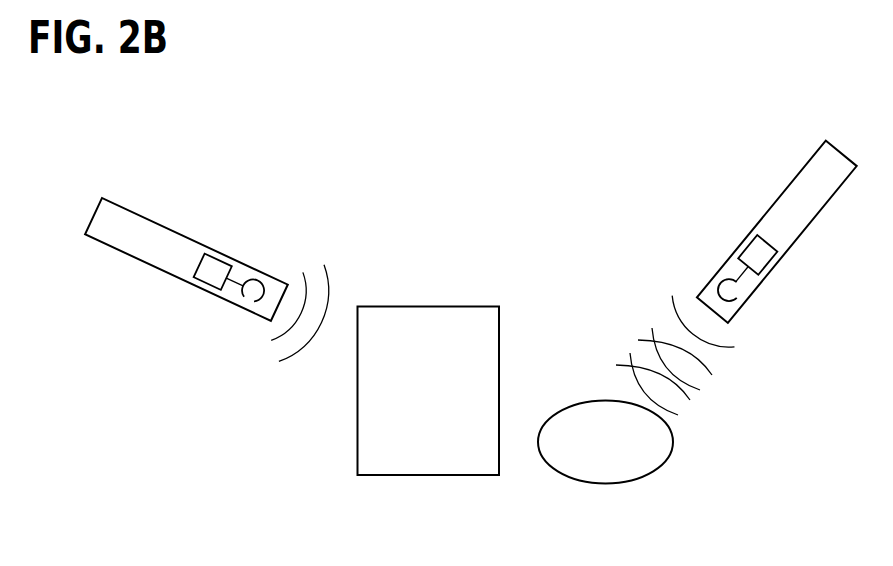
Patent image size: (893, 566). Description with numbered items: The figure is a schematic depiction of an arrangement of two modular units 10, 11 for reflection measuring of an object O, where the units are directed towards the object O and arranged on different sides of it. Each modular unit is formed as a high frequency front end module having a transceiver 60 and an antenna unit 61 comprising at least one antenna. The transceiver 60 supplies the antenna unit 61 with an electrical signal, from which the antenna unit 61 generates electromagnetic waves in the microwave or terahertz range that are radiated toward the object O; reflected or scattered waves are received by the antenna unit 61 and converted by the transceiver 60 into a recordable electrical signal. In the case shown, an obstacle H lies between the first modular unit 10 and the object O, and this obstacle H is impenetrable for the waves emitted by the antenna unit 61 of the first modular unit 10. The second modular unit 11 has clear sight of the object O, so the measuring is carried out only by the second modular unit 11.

The first modular unit 10 is at (107, 228).
The second modular unit 11 is at (797, 218).
The transceiver 60 is at (205, 275).
The antenna unit 61 is at (250, 298).
The obstacle H is at (427, 448).
The object O is at (660, 443).